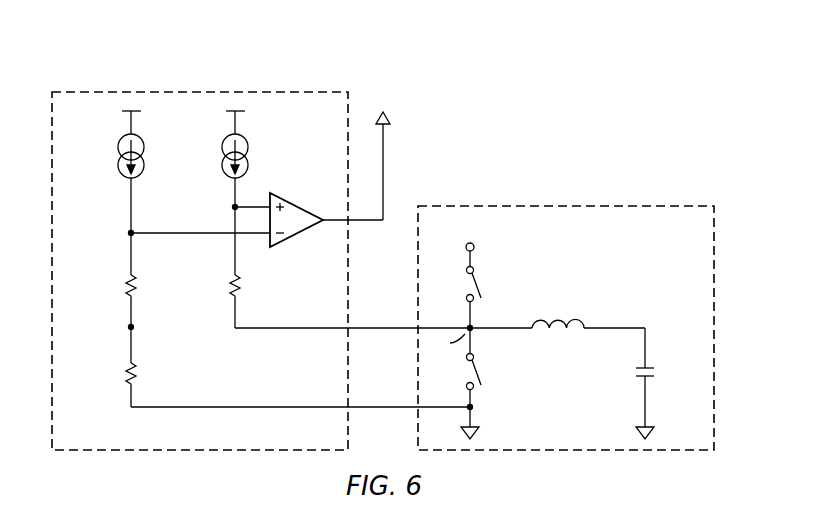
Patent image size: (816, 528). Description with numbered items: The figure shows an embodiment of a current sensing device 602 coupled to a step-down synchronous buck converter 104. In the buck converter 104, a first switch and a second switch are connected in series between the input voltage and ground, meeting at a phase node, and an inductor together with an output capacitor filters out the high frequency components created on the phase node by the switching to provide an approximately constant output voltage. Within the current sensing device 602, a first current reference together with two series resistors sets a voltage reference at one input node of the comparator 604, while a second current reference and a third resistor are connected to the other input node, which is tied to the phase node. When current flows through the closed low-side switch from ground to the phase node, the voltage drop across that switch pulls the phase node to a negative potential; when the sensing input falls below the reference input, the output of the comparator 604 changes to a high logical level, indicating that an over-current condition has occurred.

The current sensing device 602 is at (261, 248).
The comparator 604 is at (293, 237).
The step-down synchronous buck converter 104 is at (620, 200).